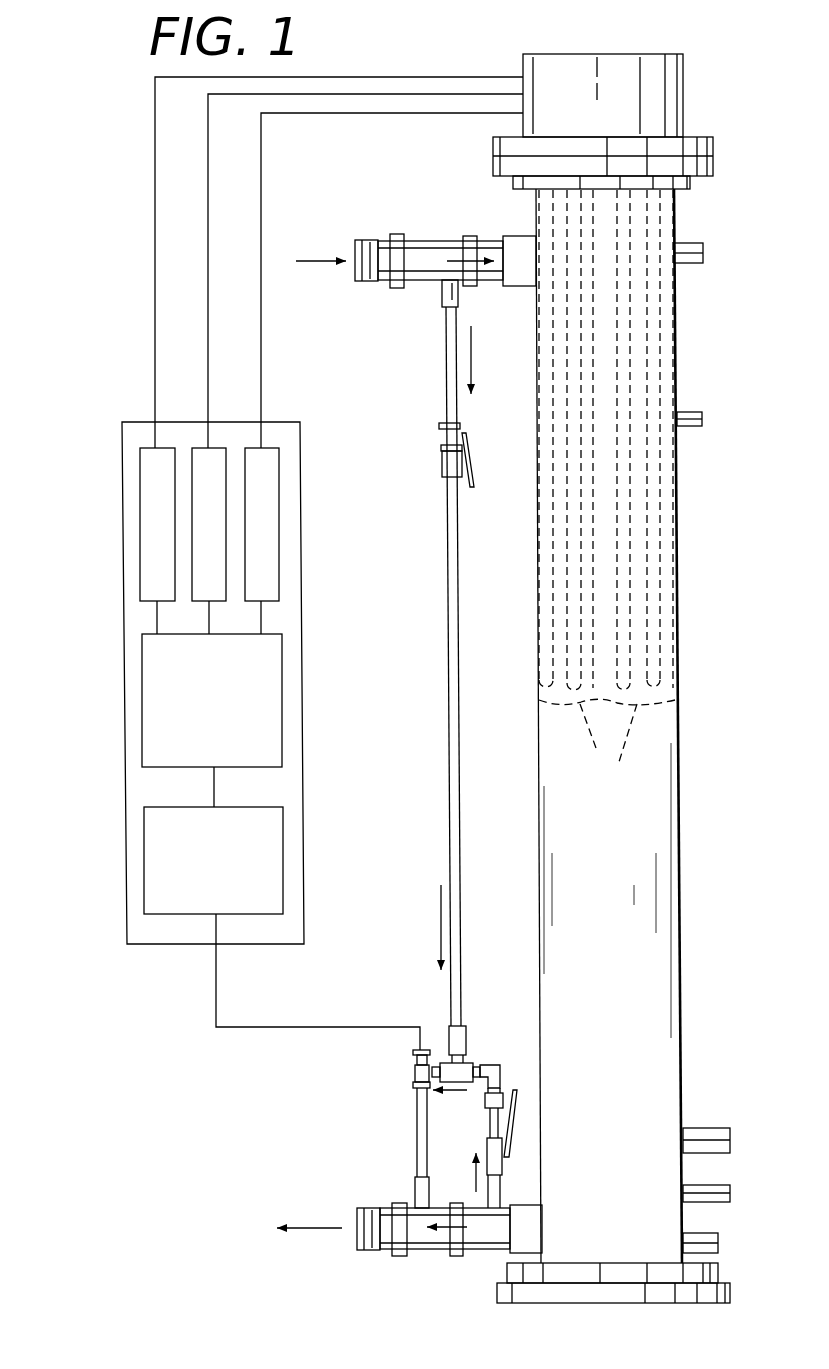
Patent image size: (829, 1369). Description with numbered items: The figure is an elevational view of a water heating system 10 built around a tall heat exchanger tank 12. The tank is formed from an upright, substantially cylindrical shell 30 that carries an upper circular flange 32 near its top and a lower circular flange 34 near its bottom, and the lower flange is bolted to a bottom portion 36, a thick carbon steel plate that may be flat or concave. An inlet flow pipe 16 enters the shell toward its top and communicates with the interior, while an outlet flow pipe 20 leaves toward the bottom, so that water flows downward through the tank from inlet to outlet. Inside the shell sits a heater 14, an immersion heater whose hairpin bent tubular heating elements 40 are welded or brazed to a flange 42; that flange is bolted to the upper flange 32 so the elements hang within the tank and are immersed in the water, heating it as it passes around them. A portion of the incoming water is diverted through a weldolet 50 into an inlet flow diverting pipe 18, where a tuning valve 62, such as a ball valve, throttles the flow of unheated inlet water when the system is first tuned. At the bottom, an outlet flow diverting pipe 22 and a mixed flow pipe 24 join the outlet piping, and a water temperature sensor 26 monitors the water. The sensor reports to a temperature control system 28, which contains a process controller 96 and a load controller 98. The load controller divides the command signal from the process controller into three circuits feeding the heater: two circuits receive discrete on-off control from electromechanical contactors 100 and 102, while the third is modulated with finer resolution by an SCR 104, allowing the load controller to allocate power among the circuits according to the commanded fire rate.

The water heating system 10 is at (63, 348).
The heat exchanger tank 12 is at (701, 795).
The heater 14 is at (672, 347).
The inlet flow pipe 16 is at (447, 240).
The inlet flow diverting pipe 18 is at (449, 622).
The outlet flow pipe 20 is at (477, 1250).
The outlet flow diverting pipe 22 is at (500, 1122).
The mixed flow pipe 24 is at (417, 1130).
The water temperature sensor 26 is at (410, 1050).
The temperature control system 28 is at (114, 683).
The shell 30 is at (680, 892).
The upper circular flange 32 is at (713, 172).
The lower circular flange 34 is at (720, 1273).
The bottom portion 36 is at (730, 1295).
The hairpin bent tubular heating elements 40 is at (608, 746).
The flange 42 is at (712, 141).
The weldolet 50 is at (442, 292).
The tuning valve 62 is at (443, 437).
The process controller 96 is at (144, 874).
The load controller 98 is at (282, 704).
The electromechanical contactor 100 is at (140, 518).
The electromechanical contactor 102 is at (195, 571).
The SCR 104 is at (280, 516).